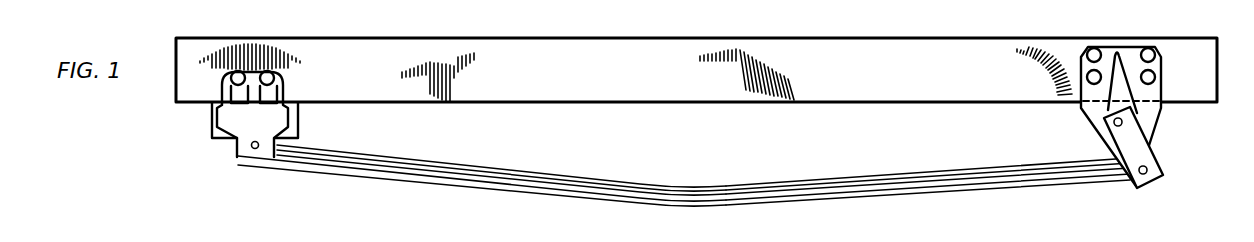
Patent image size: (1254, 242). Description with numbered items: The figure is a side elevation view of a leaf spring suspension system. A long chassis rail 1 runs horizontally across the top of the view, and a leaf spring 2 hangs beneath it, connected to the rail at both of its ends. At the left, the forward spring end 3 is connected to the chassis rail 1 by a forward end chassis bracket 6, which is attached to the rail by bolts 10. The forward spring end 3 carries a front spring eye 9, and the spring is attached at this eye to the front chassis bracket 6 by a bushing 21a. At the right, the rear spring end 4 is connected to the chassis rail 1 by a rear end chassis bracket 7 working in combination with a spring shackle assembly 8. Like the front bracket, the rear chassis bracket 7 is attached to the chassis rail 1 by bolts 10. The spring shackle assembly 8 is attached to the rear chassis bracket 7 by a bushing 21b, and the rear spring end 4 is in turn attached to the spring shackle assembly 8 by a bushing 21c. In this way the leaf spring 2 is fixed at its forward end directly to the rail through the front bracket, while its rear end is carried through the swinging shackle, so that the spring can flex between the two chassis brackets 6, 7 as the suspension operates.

The chassis rail 1 is at (765, 60).
The leaf spring 2 is at (684, 193).
The forward spring end 3 is at (328, 175).
The rear spring end 4 is at (1112, 181).
The forward end chassis bracket 6 is at (224, 138).
The rear end chassis bracket 7 is at (1142, 114).
The spring shackle assembly 8 is at (1118, 161).
The front spring eye 9 is at (252, 167).
The bolts 10 is at (1160, 67).
The bushing 21a is at (250, 147).
The bushing 21b is at (1103, 144).
The bushing 21c is at (1152, 173).